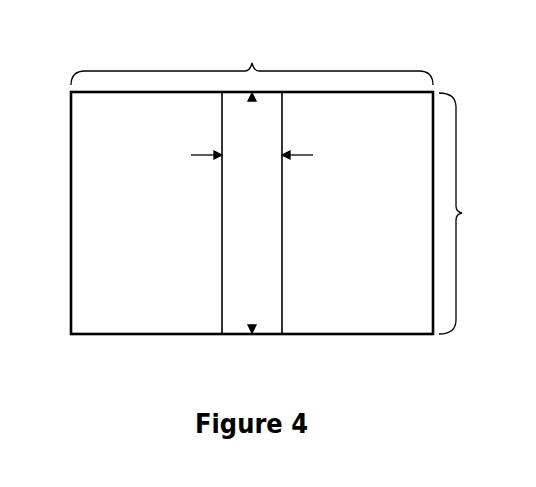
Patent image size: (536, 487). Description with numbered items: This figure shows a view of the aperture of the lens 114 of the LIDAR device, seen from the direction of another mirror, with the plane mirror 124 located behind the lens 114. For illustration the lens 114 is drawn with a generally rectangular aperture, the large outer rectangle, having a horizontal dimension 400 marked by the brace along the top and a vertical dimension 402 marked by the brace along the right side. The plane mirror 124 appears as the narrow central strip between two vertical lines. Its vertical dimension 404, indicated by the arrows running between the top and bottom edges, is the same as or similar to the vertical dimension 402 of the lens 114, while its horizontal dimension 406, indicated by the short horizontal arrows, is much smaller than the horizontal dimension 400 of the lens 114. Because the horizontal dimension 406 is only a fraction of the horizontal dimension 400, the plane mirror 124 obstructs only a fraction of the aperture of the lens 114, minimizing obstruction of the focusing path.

The lens 114 is at (71, 305).
The plane mirror 124 is at (222, 243).
The horizontal dimension 400 is at (252, 62).
The vertical dimension 402 is at (471, 213).
The vertical dimension 404 is at (253, 213).
The horizontal dimension 406 is at (271, 153).